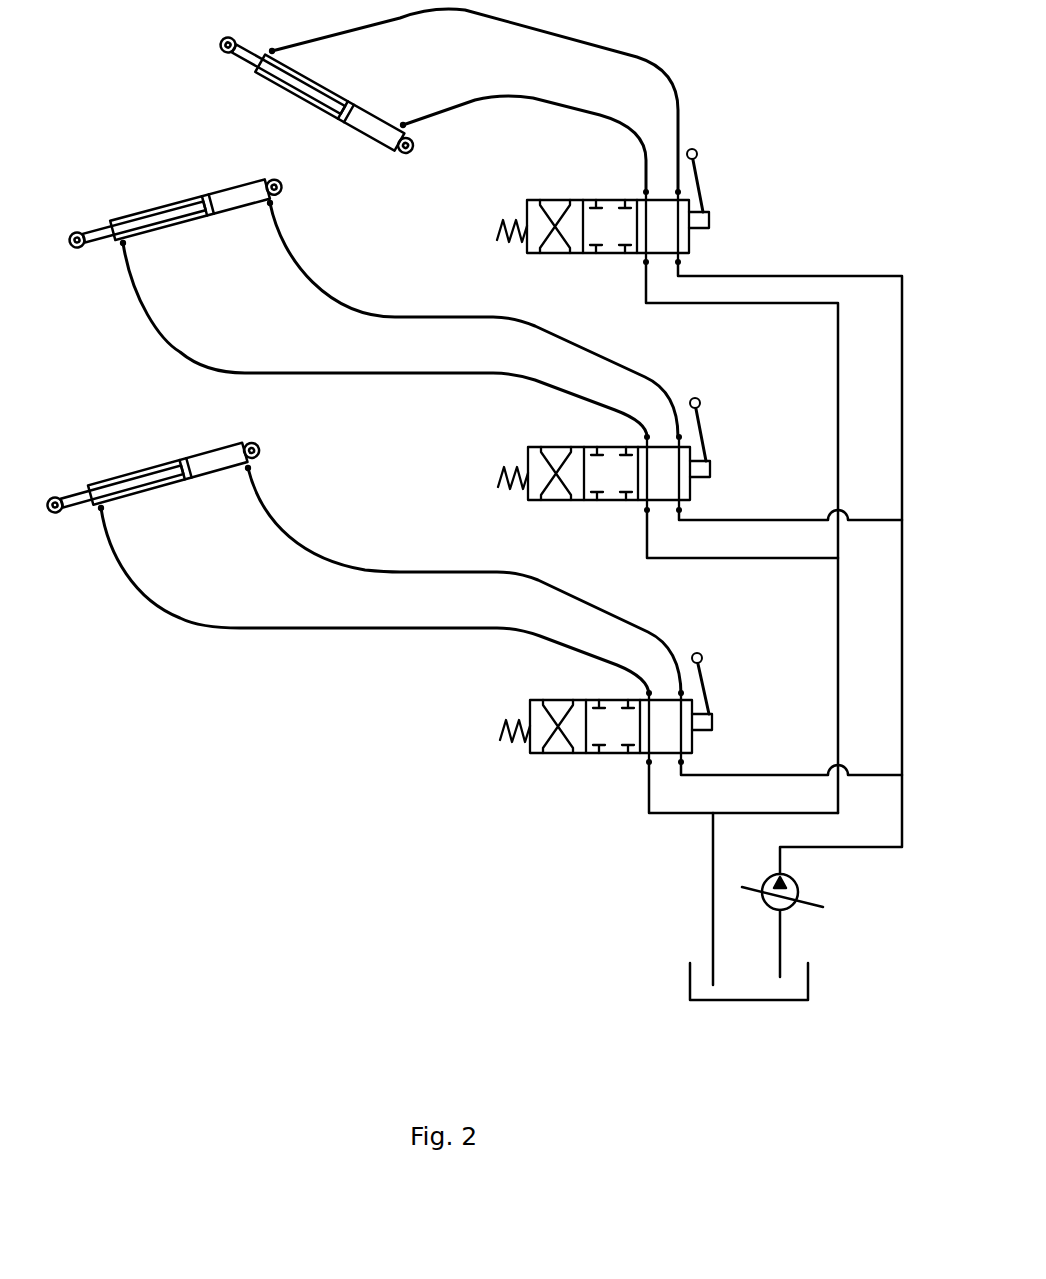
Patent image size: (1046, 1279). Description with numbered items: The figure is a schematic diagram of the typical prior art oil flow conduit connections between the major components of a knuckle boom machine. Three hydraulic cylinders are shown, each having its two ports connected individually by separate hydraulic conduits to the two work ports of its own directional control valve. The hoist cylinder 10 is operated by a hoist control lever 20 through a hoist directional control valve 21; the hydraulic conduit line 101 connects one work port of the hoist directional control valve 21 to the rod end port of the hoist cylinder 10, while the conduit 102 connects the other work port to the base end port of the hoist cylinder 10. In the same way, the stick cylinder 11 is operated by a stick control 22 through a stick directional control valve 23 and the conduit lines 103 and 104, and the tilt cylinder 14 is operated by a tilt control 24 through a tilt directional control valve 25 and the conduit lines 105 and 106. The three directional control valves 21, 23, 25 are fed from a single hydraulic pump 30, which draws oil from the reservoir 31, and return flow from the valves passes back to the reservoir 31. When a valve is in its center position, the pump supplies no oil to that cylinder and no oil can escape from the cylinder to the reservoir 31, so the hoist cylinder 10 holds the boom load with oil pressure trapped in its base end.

The hoist cylinder 10 is at (350, 124).
The stick cylinder 11 is at (182, 202).
The tilt cylinder 14 is at (203, 453).
The hoist control lever 20 is at (703, 195).
The hoist directional control valve 21 is at (603, 253).
The stick control 22 is at (705, 425).
The stick directional control valve 23 is at (600, 500).
The tilt control 24 is at (712, 690).
The tilt directional control valve 25 is at (583, 753).
The hydraulic pump 30 is at (795, 906).
The reservoir 31 is at (690, 977).
The hydraulic conduit line 101 is at (503, 18).
The conduit 102 is at (543, 102).
The conduit line 103 is at (397, 316).
The conduit line 104 is at (400, 373).
The conduit line 105 is at (427, 570).
The conduit line 106 is at (387, 628).